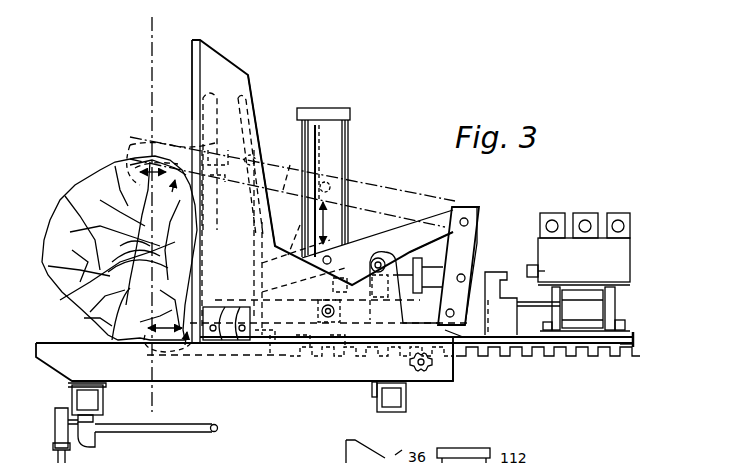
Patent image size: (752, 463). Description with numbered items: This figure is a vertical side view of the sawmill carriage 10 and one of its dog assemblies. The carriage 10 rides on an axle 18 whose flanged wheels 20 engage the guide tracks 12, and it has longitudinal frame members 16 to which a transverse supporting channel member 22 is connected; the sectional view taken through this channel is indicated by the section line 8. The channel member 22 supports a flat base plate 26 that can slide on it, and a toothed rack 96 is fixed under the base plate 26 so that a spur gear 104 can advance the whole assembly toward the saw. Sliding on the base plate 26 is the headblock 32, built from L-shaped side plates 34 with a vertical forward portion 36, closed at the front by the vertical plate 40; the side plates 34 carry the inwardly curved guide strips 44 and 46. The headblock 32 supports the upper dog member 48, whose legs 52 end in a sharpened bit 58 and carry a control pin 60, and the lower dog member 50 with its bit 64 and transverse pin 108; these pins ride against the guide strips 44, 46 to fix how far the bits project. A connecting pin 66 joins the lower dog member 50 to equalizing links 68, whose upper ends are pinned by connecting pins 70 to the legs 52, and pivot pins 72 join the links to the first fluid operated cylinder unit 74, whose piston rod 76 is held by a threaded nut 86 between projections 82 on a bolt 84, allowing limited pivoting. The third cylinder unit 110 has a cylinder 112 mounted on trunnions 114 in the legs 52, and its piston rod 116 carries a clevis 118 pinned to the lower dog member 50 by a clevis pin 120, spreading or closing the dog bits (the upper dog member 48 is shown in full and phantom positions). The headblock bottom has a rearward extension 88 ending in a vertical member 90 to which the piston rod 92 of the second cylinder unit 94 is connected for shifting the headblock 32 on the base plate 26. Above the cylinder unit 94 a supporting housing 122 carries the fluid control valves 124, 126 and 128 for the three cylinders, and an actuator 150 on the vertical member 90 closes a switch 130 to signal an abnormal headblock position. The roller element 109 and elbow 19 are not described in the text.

The section line 8- 8 is at (172, 38).
The sawmill carriage 10 is at (70, 400).
The supporting and guide tracks 12 is at (58, 453).
The longitudinal frame members 16 is at (72, 385).
The axle 18 is at (174, 428).
The elbow 19 is at (96, 440).
The flanged wheels 20 is at (60, 432).
The supporting channel member 22 is at (60, 372).
The base plate 26 is at (630, 339).
The headblock 32 is at (258, 116).
The side plates 34 is at (224, 269).
The vertical forward portion 36 is at (222, 70).
The vertical plate 40 is at (190, 66).
The guide strip 44 is at (204, 224).
The guide strip 46 is at (257, 238).
The upper dog member 48 is at (365, 183).
The lower dog member 50 is at (272, 352).
The legs 52 is at (422, 228).
The sharpened bit 58 is at (190, 150).
The pin 60 is at (262, 252).
The sharpened bit 64 is at (148, 330).
The connecting pin 66 is at (440, 330).
The equalizing links 68 is at (469, 248).
The connecting pins 70 is at (468, 216).
The pivot pins 72 is at (468, 276).
The first fluid operated cylinder unit 74 is at (470, 268).
The piston rod 76 is at (412, 260).
The projections 82 is at (418, 233).
The bolt 84 is at (386, 288).
The threaded nut 86 is at (338, 300).
The rearward extension 88 is at (447, 378).
The vertical member 90 is at (488, 335).
The piston rod 92 is at (522, 310).
The second fluid-operated cylinder unit 94 is at (594, 304).
The toothed rack 96 is at (622, 347).
The spur gear 104 is at (412, 364).
The transverse pin 108 is at (265, 342).
The roller box 109 is at (226, 345).
The third fluid operated cylinder unit 110 is at (350, 140).
The cylinder 112 is at (323, 130).
The trunnions 114 is at (330, 255).
The piston rod 116 is at (333, 280).
The clevis 118 is at (307, 352).
The clevis pin 120 is at (339, 352).
The supporting housing 122 is at (622, 257).
The fluid control valve 124 is at (549, 212).
The fluid control valve 126 is at (585, 212).
The fluid control valve 128 is at (620, 212).
The switch 130 is at (531, 274).
The actuator 150 is at (507, 268).